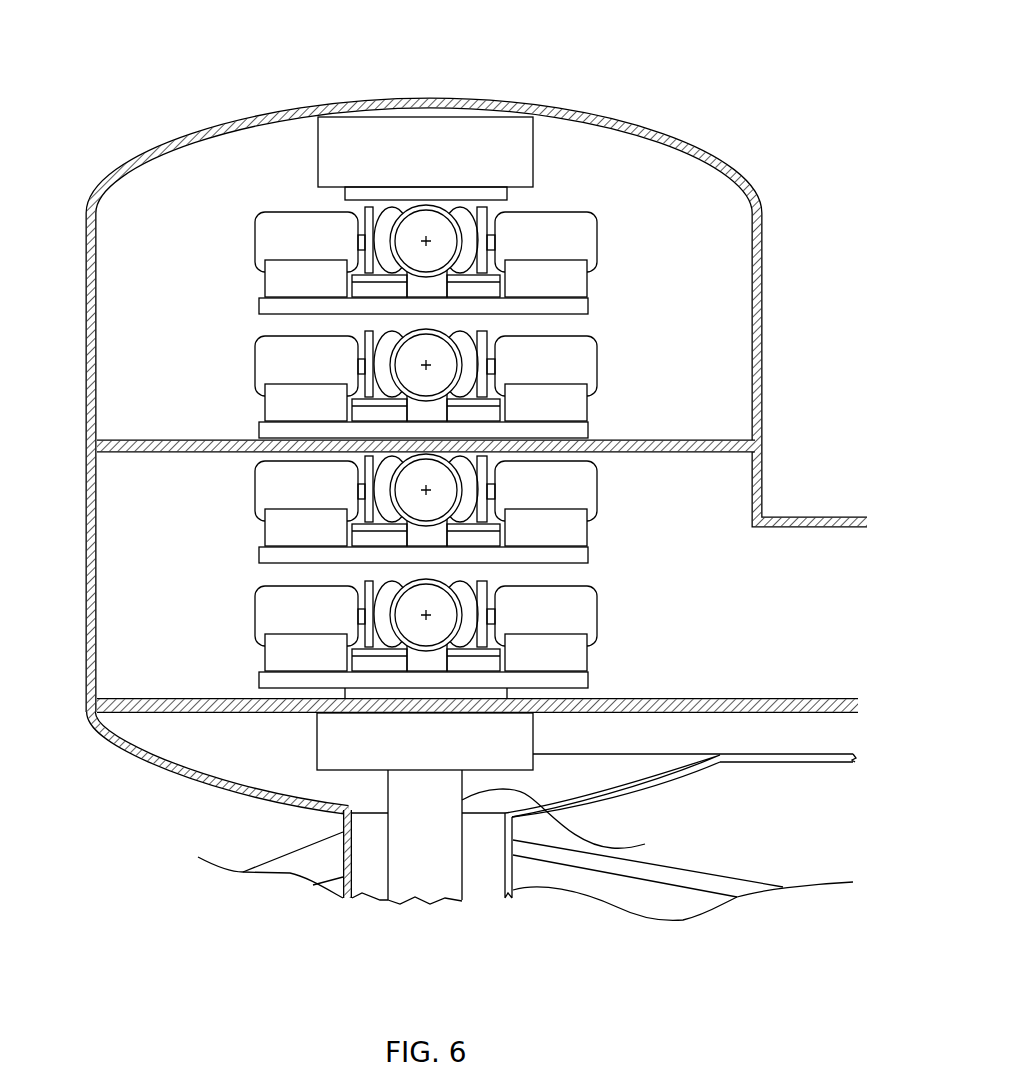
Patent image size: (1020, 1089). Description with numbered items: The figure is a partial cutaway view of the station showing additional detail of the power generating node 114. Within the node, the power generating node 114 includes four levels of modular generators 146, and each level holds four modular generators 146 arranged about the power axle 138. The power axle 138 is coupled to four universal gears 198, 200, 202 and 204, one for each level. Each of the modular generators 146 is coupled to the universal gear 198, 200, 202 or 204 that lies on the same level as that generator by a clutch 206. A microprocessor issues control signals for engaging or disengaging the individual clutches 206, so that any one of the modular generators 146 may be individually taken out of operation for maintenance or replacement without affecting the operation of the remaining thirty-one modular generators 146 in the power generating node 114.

The power generating node 114 is at (597, 113).
The power axle 138 is at (645, 844).
The modular generator 146 is at (290, 212).
The universal gear 198 is at (587, 642).
The universal gear 200 is at (588, 516).
The universal gear 202 is at (590, 428).
The universal gear 204 is at (533, 161).
The clutch 206 is at (393, 268).